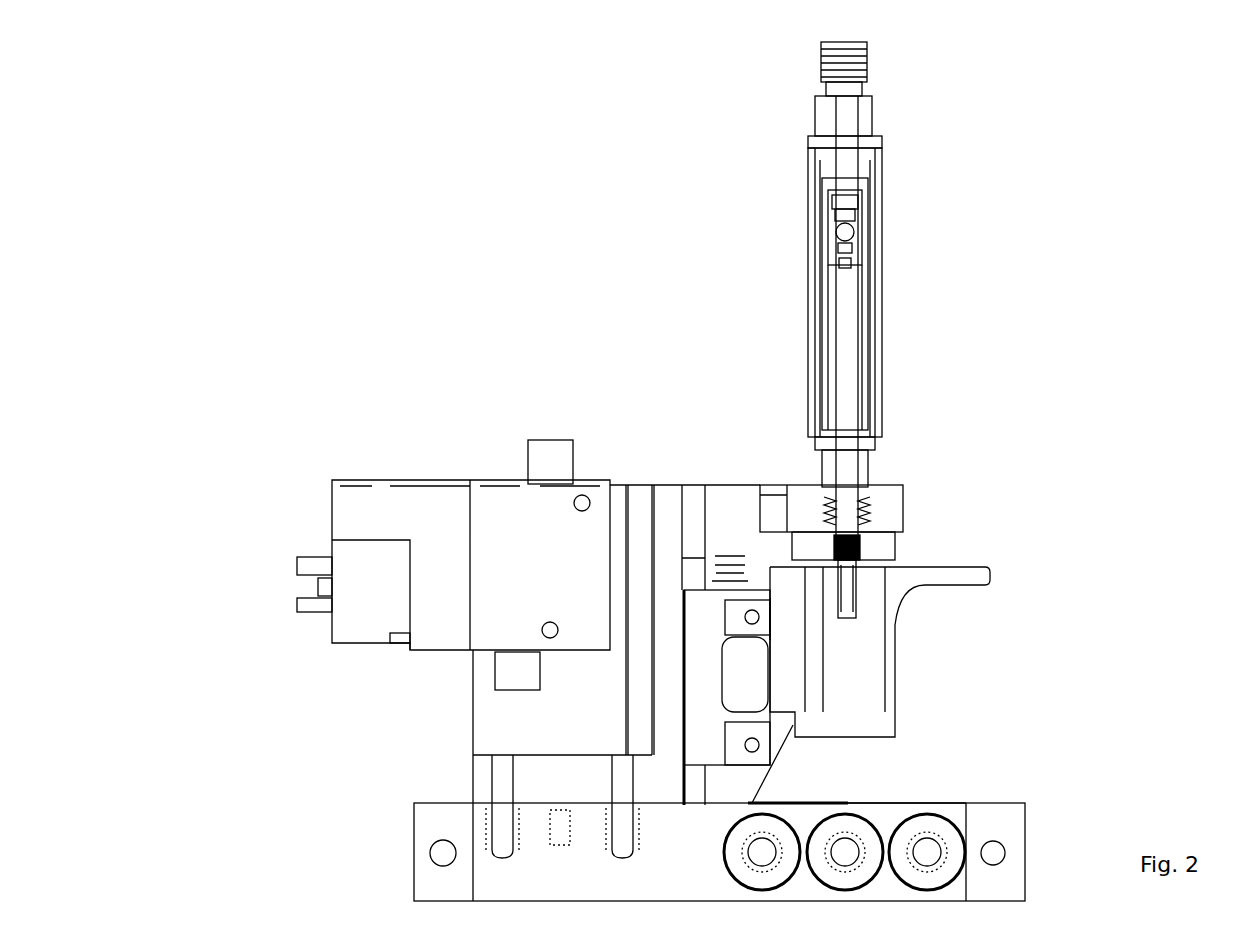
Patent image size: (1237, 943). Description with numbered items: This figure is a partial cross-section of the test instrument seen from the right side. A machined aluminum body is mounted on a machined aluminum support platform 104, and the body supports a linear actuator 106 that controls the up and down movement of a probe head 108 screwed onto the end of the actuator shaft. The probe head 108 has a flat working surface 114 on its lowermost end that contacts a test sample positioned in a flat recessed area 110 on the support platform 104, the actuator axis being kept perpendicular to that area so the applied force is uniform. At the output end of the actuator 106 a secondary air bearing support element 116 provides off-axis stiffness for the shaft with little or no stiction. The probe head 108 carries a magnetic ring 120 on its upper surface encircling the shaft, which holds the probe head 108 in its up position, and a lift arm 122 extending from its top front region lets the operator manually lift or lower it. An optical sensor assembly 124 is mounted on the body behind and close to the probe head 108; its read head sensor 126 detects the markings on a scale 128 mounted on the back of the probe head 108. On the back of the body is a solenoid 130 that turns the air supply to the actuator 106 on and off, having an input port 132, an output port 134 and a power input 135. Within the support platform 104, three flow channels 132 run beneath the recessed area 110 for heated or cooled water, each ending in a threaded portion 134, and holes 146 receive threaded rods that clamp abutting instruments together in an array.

The support platform 104 is at (719, 693).
The linear actuator 106 is at (868, 70).
The probe head 108 is at (832, 652).
The recessed area 110 is at (905, 812).
The working surface 114 is at (822, 738).
The secondary air bearing support element 116 is at (886, 537).
The magnetic ring 120 is at (818, 560).
The lift arm 122 is at (968, 573).
The optical sensor assembly 124 is at (750, 658).
The read head sensor 126 is at (740, 675).
The scale 128 is at (780, 632).
The solenoid 130 is at (360, 498).
The input port / flow channel 132 is at (498, 672).
The output port / threaded portion 134 is at (545, 448).
The power input 135 is at (295, 560).
The aligned holes 146 is at (430, 856).